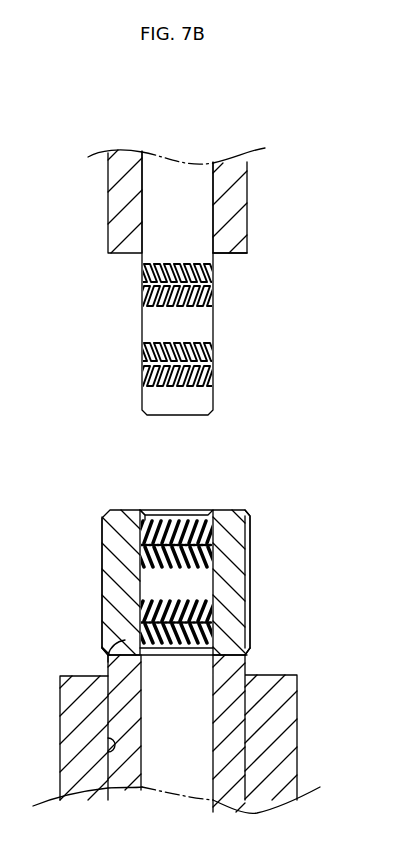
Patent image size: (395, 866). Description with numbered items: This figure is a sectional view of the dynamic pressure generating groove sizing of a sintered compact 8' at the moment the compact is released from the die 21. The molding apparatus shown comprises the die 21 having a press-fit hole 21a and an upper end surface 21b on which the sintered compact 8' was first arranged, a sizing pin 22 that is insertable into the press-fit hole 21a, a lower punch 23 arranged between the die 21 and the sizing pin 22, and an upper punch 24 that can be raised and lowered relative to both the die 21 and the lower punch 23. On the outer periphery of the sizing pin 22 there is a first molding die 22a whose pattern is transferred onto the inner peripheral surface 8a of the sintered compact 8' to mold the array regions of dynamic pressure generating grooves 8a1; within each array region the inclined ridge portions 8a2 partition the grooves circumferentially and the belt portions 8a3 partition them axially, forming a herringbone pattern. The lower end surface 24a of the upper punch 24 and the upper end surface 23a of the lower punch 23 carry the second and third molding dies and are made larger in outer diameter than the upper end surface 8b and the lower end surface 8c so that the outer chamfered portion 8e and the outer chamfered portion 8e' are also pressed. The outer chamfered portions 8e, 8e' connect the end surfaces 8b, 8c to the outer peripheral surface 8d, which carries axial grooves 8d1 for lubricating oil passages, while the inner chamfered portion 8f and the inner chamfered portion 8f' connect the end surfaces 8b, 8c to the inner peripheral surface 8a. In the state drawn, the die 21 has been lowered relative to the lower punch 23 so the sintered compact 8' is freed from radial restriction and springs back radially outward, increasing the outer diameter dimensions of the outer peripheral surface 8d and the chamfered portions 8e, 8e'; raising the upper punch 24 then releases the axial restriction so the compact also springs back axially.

The sizing pin 22 is at (190, 185).
The first molding die 22a is at (140, 284).
The upper punch 24 is at (238, 197).
The lower end surface of the upper punch 24a is at (232, 253).
The sintered compact 8' is at (101, 582).
The inner peripheral surface 8a is at (226, 593).
The dynamic pressure generating grooves 8a1 is at (168, 525).
The inclined ridge portions 8a2 is at (192, 520).
The belt portions 8a3 is at (213, 532).
The upper end surface 8b is at (230, 510).
The lower end surface 8c is at (245, 665).
The outer peripheral surface 8d is at (103, 598).
The axial grooves 8d1 is at (247, 593).
The outer chamfered portion 8e is at (276, 573).
The outer chamfered portion 8e' is at (297, 644).
The inner chamfered portion 8f is at (117, 497).
The inner chamfered portion 8f' is at (84, 653).
The upper end surface of the lower punch 23a is at (112, 648).
The die 21 is at (80, 768).
The press-fit hole 21a is at (108, 738).
The upper end surface of the die 21b is at (65, 676).
The lower punch 23 is at (235, 758).